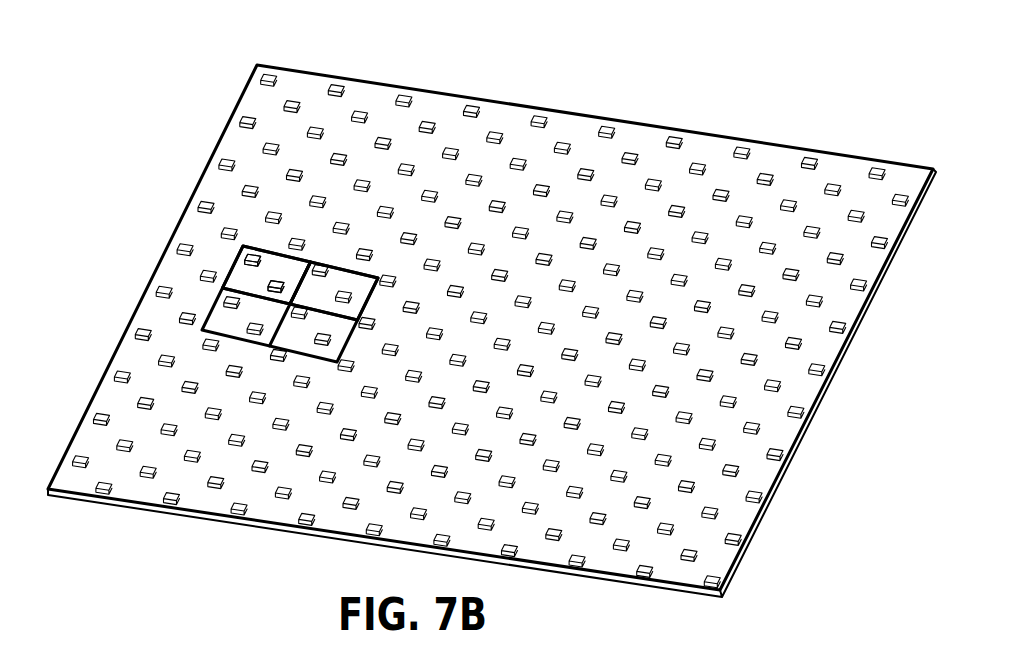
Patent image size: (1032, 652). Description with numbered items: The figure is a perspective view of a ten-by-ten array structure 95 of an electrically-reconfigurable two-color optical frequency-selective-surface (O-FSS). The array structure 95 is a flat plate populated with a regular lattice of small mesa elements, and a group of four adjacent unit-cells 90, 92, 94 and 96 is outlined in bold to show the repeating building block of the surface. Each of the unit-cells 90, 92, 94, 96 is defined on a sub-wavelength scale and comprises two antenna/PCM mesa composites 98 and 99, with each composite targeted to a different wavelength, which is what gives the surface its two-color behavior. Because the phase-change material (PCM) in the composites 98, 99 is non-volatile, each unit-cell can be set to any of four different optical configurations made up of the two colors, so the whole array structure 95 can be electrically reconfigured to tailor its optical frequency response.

The unit-cell 90 is at (202, 326).
The unit-cell 92 is at (230, 267).
The unit-cell 94 is at (347, 272).
The array structure 95 is at (577, 112).
The unit-cell 96 is at (337, 362).
The antenna/PCM mesa composite 98 is at (277, 283).
The antenna/PCM mesa composite 99 is at (252, 250).